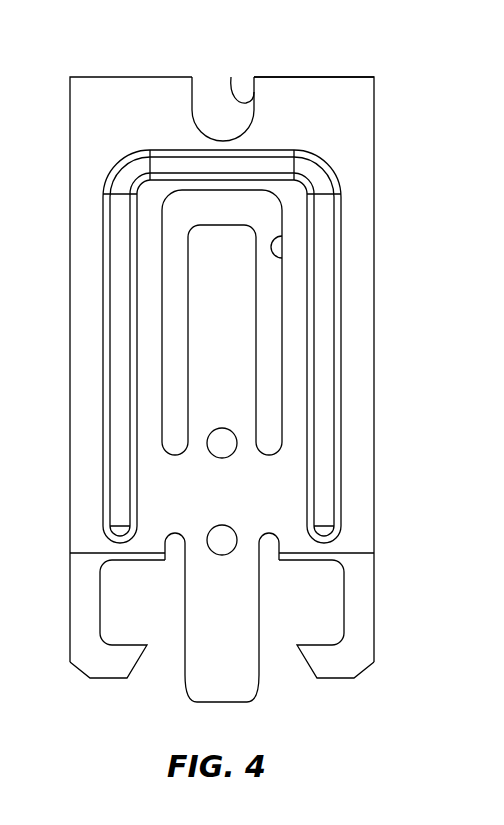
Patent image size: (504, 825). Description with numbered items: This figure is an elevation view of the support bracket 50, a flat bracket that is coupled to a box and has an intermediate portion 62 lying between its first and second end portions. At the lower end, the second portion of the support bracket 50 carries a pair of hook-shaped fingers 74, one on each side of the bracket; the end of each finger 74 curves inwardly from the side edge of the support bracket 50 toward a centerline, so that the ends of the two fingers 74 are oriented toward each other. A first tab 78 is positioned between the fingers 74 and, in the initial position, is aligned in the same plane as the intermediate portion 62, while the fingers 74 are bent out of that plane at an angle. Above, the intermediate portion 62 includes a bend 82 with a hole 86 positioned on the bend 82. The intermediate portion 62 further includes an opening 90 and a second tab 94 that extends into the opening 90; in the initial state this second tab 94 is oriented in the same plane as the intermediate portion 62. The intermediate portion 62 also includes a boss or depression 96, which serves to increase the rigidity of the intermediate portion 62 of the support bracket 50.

The support bracket 50 is at (446, 85).
The intermediate portion 62 is at (357, 390).
The hook-shaped fingers 74 is at (102, 658).
The first tab 78 is at (202, 645).
The bend 82 is at (343, 76).
The hole 86 is at (237, 75).
The opening 90 is at (283, 258).
The second tab 94 is at (295, 322).
The boss or depression 96 is at (328, 333).